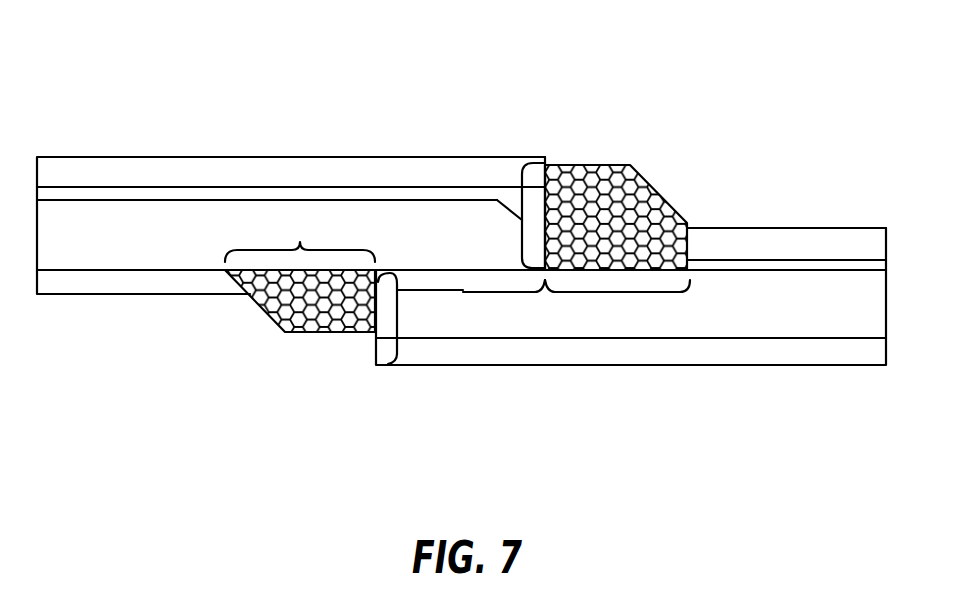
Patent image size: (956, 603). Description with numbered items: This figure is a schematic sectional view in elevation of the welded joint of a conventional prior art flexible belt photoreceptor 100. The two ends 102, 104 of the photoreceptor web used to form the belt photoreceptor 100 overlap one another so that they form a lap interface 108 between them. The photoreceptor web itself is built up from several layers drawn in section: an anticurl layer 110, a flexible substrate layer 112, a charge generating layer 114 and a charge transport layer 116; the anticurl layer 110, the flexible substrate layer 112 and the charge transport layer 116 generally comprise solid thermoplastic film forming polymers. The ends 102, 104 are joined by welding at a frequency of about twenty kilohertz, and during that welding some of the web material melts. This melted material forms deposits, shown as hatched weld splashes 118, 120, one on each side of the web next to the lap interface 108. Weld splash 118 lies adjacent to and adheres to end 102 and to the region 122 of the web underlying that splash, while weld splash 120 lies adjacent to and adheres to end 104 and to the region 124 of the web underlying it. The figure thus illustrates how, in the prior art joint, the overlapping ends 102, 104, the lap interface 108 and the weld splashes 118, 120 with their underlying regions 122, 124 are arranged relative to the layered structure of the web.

The belt photoreceptor 100 is at (390, 115).
The end of photoreceptor web 102 is at (497, 202).
The end of photoreceptor web 104 is at (397, 315).
The lap interface 108 is at (463, 292).
The anticurl layer 110 is at (684, 352).
The flexible substrate layer 112 is at (775, 300).
The charge generating layer 114 is at (720, 265).
The charge transport layer 116 is at (818, 233).
The weld splash 118 is at (645, 193).
The weld splash 120 is at (280, 317).
The region of the web underlying the splash 122 is at (618, 292).
The region of the web underlying the splash 124 is at (300, 242).